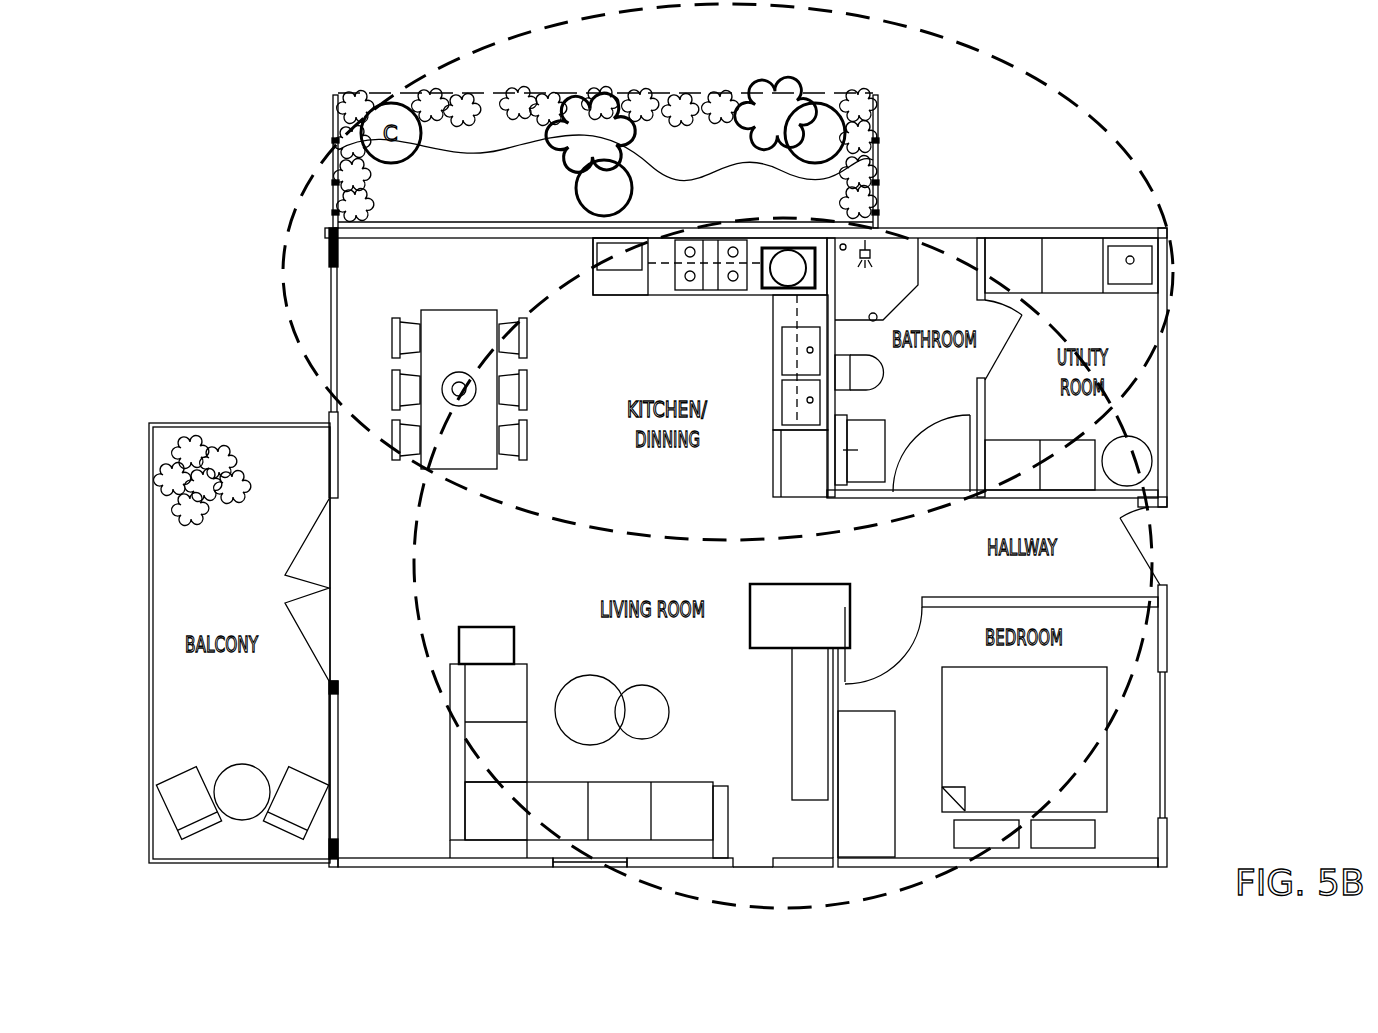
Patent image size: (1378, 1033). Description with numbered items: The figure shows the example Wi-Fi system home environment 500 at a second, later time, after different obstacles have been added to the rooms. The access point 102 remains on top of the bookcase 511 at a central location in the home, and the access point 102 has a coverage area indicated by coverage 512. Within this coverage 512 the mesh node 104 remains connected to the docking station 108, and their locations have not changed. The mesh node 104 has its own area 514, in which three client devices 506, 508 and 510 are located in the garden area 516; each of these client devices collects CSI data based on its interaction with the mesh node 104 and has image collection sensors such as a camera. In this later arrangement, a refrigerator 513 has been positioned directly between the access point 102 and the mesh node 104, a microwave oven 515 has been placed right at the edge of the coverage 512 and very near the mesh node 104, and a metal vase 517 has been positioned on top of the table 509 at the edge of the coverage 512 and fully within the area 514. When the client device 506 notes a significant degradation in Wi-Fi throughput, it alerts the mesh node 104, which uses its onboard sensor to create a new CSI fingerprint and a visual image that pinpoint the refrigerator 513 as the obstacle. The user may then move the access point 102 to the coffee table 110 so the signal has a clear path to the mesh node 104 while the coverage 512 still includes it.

The apartment environment 500 is at (1160, 121).
The area 514 is at (1013, 55).
The client device 506 is at (830, 104).
The client device 508 is at (632, 195).
The client device 510 is at (345, 135).
The garden area 516 is at (392, 187).
The docking station 108 is at (775, 248).
The mesh node 104 is at (773, 292).
The microwave oven 515 is at (595, 255).
The refrigerator 513 is at (773, 458).
The table 509 is at (470, 450).
The metal vase 517 is at (470, 385).
The coverage 512 is at (1145, 462).
The coffee table 110 is at (490, 627).
The access point 102 is at (762, 648).
The bookcase 511 is at (792, 780).